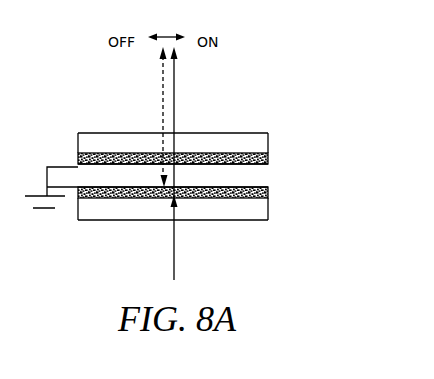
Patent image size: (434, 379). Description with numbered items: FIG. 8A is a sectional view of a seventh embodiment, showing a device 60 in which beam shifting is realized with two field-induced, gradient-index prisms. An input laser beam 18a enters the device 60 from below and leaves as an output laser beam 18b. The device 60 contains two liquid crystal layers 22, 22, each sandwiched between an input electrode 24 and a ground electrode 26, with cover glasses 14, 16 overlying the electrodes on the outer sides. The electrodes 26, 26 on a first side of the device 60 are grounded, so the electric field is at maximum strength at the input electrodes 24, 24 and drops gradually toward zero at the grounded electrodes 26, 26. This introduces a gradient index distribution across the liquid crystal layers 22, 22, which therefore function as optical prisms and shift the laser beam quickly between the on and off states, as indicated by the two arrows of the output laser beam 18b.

The device 60 is at (280, 71).
The cover glass 14 is at (108, 133).
The cover glass 16 is at (245, 220).
The liquid crystal layer 22 is at (210, 133).
The input electrode 24 is at (87, 157).
The ground electrode 26 is at (79, 176).
The input laser beam 18a is at (176, 252).
The output laser beam 18b is at (162, 95).